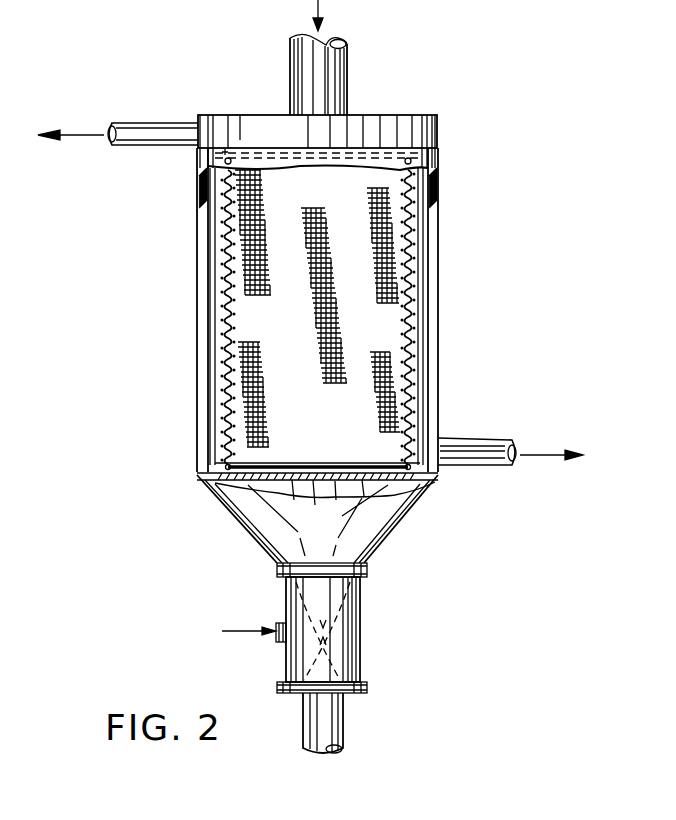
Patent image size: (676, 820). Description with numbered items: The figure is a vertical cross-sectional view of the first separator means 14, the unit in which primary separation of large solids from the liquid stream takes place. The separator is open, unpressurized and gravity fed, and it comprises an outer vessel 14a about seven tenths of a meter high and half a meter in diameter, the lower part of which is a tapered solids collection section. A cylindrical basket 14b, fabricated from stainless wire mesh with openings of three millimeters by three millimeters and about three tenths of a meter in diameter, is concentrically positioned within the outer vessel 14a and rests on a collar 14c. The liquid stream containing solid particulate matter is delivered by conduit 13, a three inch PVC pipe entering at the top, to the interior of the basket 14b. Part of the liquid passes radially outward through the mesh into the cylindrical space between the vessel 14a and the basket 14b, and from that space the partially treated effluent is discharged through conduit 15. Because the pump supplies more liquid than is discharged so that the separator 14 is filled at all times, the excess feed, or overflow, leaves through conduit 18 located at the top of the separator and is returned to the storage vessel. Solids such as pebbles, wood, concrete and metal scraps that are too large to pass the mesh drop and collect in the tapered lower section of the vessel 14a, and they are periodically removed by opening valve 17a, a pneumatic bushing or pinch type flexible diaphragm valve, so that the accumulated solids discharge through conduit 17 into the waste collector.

The conduit 13 is at (349, 64).
The first separator means 14 is at (442, 142).
The outer vessel 14a is at (439, 348).
The cylindrical basket 14b is at (412, 286).
The collar 14c is at (222, 487).
The conduit 15 is at (507, 438).
The conduit 17 is at (344, 730).
The valve 17a is at (360, 661).
The conduit 18 is at (160, 123).